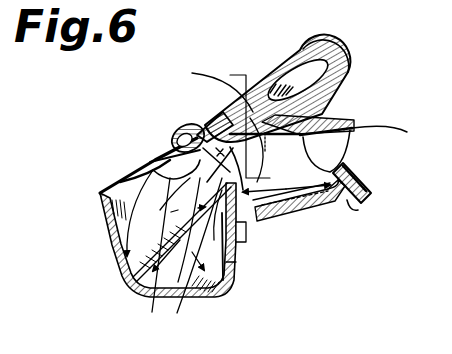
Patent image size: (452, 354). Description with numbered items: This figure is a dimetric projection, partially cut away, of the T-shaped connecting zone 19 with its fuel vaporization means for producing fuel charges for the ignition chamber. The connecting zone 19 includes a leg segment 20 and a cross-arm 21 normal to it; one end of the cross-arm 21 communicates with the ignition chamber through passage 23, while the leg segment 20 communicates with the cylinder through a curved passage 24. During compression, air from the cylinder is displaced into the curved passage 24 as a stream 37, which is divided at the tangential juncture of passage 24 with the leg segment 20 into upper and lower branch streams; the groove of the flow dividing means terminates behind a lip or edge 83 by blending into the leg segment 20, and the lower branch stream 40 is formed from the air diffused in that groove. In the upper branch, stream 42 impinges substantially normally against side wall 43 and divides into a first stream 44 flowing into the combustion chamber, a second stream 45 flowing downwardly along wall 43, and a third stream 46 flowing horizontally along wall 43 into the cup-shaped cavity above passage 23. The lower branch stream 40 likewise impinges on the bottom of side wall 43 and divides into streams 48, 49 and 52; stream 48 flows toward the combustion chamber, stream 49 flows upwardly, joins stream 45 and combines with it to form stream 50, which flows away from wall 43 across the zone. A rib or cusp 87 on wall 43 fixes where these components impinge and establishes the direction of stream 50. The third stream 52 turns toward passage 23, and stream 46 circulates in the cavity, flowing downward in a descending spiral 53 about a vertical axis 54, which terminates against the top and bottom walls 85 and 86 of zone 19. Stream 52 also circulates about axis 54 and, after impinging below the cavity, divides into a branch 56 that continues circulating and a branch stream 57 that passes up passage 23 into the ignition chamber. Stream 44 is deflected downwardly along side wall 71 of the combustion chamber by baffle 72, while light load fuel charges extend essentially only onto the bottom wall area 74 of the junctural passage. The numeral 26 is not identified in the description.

The T-shaped connecting zone 19 is at (247, 238).
The leg segment 20 is at (312, 203).
The cross-arm 21 is at (199, 255).
The passage 23 is at (349, 76).
The curved passage 24 is at (338, 146).
The element 26 is at (443, 295).
The stream 37 is at (380, 125).
The lower branch stream 40 is at (283, 216).
The stream 42 is at (273, 140).
The side wall 43 is at (182, 232).
The first stream 44 is at (125, 181).
The second stream 45 is at (183, 155).
The third stream 46 is at (205, 125).
The stream 48 is at (154, 254).
The stream 49 is at (158, 213).
The stream 50 is at (236, 264).
The third stream 52 is at (191, 122).
The descending spiral 53 is at (337, 110).
The vertical axis 54 is at (234, 75).
The branch 56 is at (267, 187).
The branch stream 57 is at (340, 58).
The side wall 71 is at (100, 229).
The baffle 72 is at (172, 135).
The bottom wall area 74 is at (203, 303).
The lip or edge 83 is at (354, 193).
The top wall 85 is at (212, 88).
The bottom wall 86 is at (286, 182).
The rib or cusp 87 is at (147, 168).